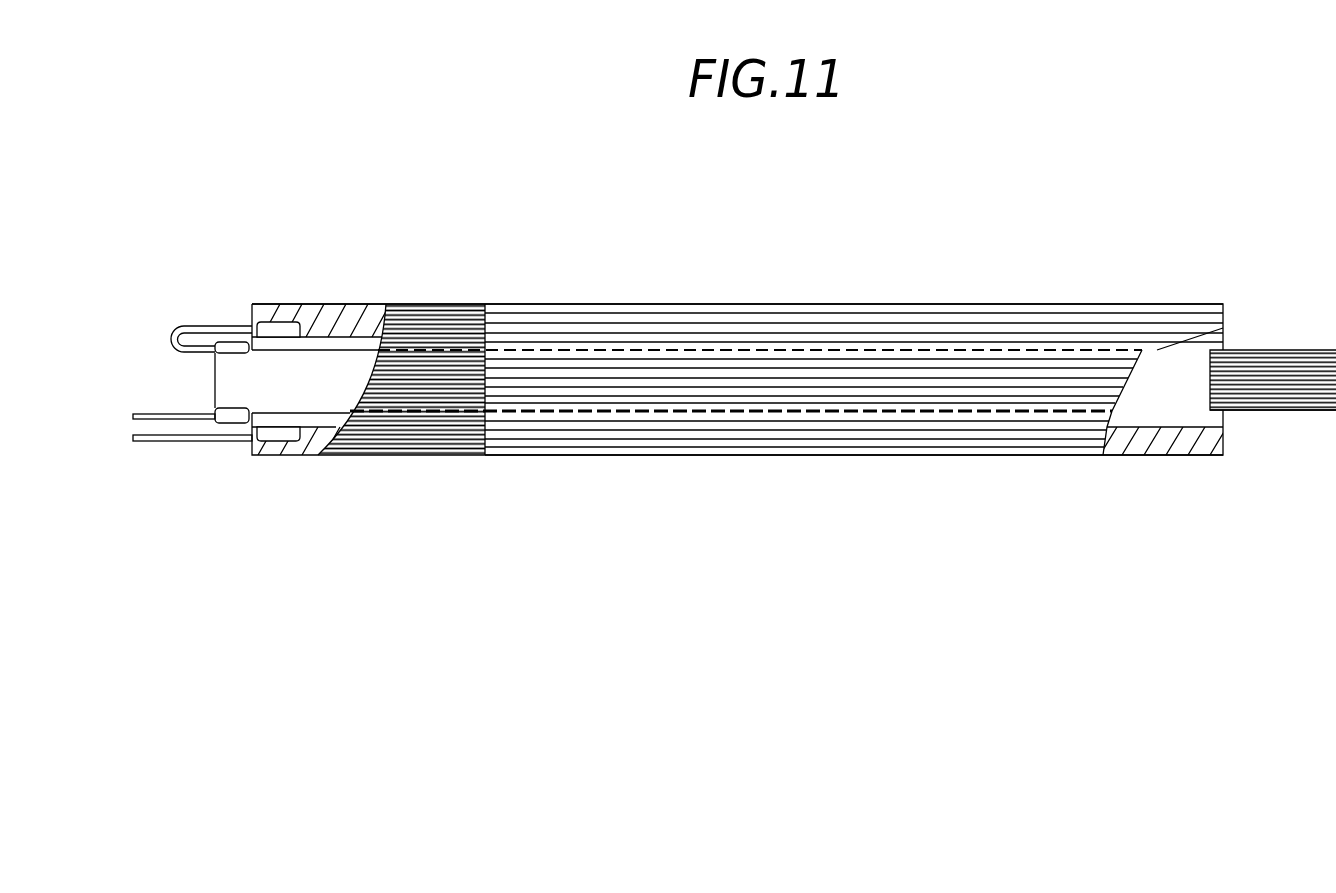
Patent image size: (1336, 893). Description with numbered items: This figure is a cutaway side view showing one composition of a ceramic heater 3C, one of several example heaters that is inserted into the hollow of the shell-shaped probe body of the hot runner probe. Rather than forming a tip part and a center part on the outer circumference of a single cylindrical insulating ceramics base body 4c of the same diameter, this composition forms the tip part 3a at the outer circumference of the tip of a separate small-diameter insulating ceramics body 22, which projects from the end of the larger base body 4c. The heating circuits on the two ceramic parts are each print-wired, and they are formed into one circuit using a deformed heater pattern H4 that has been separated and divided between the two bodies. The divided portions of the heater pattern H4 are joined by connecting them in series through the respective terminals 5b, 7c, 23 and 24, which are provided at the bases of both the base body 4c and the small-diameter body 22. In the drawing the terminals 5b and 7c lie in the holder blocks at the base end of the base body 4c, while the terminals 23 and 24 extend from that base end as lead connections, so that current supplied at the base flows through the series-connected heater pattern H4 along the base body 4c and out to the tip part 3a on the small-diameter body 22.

The ceramic heater 3C is at (1173, 300).
The cylindrical insulating ceramics base body 4c is at (1061, 302).
The terminal 5b is at (273, 328).
The terminal 7c is at (282, 443).
The terminal 24 is at (228, 350).
The terminal 23 is at (212, 404).
The small-diameter insulating ceramics body 22 is at (1173, 397).
The tip part 3a is at (1285, 358).
The deformed heater pattern H4 is at (987, 443).